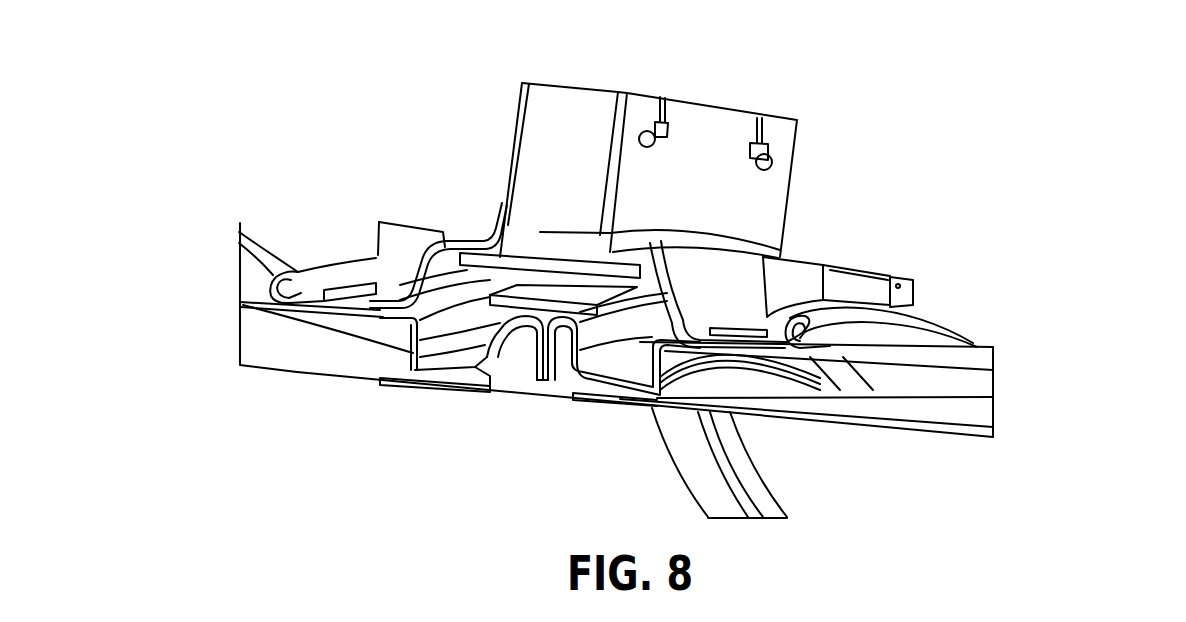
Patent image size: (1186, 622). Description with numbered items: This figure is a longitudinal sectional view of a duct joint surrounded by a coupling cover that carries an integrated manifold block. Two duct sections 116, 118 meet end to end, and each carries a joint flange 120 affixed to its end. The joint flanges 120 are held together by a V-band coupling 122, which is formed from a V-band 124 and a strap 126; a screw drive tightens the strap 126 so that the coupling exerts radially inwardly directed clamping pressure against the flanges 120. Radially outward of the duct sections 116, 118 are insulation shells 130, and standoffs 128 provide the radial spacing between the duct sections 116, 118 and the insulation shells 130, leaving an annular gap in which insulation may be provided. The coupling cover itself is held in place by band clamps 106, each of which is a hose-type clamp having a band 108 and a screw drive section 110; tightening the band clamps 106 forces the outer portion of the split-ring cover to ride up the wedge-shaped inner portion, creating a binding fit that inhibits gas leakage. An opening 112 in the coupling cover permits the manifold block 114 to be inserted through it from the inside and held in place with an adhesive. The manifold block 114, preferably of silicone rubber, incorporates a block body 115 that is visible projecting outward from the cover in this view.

The band clamp 106 is at (376, 206).
The band 108 is at (363, 297).
The screw drive section 110 is at (418, 240).
The opening 112 is at (496, 223).
The manifold block 114 is at (525, 59).
The block body 115 is at (589, 184).
The duct section 116 is at (883, 423).
The duct section 118 is at (300, 373).
The joint flange 120 is at (509, 362).
The V-band coupling 122 is at (595, 339).
The V-band 124 is at (470, 372).
The strap 126 is at (550, 290).
The standoff 128 is at (400, 350).
The insulation shell 130 is at (262, 299).